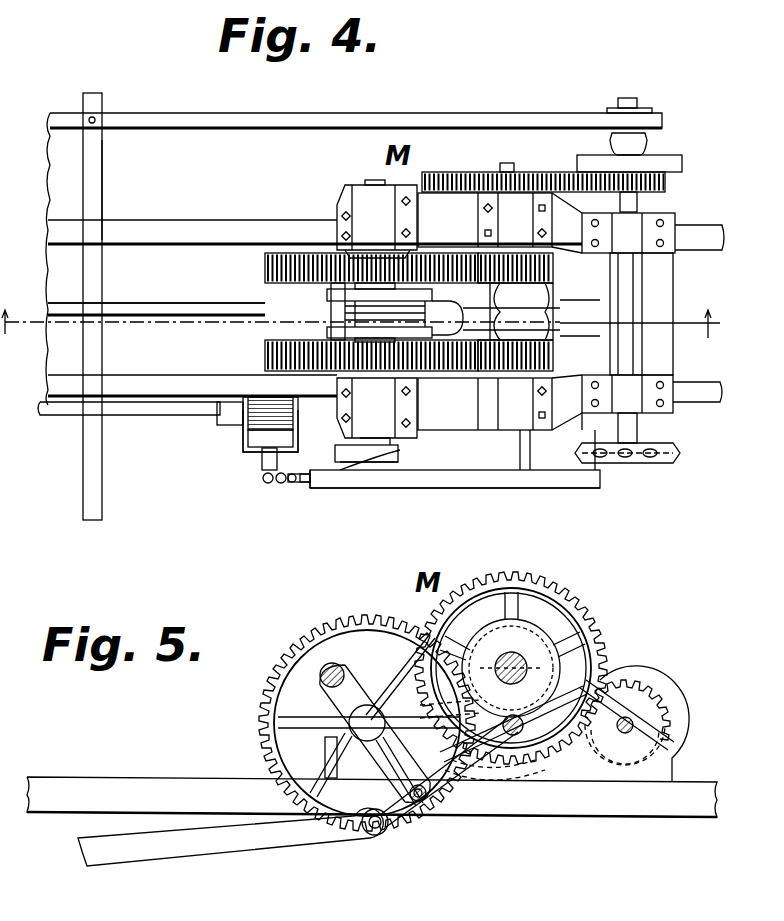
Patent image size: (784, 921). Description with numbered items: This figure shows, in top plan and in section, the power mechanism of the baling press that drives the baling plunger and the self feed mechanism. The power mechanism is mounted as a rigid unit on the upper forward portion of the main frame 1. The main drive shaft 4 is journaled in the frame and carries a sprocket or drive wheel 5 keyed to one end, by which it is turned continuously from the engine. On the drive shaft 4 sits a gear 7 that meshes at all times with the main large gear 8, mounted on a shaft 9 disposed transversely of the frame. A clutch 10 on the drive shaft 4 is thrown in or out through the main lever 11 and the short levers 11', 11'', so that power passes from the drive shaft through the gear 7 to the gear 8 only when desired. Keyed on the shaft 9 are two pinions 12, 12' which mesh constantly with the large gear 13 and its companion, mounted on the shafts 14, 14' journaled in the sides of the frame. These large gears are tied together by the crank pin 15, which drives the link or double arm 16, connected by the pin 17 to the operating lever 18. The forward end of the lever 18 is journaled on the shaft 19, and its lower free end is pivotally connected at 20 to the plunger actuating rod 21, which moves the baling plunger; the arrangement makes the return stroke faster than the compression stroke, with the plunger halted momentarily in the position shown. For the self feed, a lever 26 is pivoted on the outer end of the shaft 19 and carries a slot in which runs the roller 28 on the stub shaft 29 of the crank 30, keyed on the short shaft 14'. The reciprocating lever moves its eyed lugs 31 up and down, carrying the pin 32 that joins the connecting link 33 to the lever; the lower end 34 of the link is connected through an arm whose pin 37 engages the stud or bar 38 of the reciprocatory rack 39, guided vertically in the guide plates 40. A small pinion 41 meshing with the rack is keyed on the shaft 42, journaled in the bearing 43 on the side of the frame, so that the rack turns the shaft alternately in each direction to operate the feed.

In FIG. 5, the main frame 1 is at (578, 808).
In FIG. 4, the main drive shaft 4 is at (628, 291).
In FIG. 5, the main drive shaft 4 is at (650, 700).
In FIG. 4, the sprocket or drive wheel 5 is at (645, 475).
In FIG. 4, the gear 7 is at (665, 183).
In FIG. 5, the gear 7 is at (632, 715).
In FIG. 4, the main large gear 8 is at (540, 178).
In FIG. 5, the main large gear 8 is at (578, 595).
In FIG. 4, the shaft 9 is at (500, 166).
In FIG. 5, the shaft 9 is at (515, 660).
In FIG. 4, the clutch 10 is at (652, 160).
In FIG. 4, the main lever 11 is at (354, 245).
In FIG. 4, the short lever 11' is at (66, 294).
In FIG. 4, the short lever 11'' is at (129, 190).
In FIG. 4, the gear or pinion 12 is at (535, 275).
In FIG. 5, the gear or pinion 12 is at (549, 697).
In FIG. 4, the gear or pinion 12' is at (537, 355).
In FIG. 4, the large gear 13 is at (418, 250).
In FIG. 5, the large gear 13 is at (350, 625).
In FIG. 4, the shaft 14 is at (367, 204).
In FIG. 4, the shaft 14' is at (404, 420).
In FIG. 4, the crank pin 15 is at (265, 292).
In FIG. 5, the crank pin 15 is at (283, 692).
In FIG. 4, the link or double arm 16 is at (265, 340).
In FIG. 5, the link or double arm 16 is at (405, 730).
In FIG. 4, the pin 17 is at (425, 308).
In FIG. 5, the pin 17 is at (422, 805).
In FIG. 4, the operating lever 18 is at (520, 325).
In FIG. 5, the operating lever 18 is at (450, 780).
In FIG. 4, the shaft 19 is at (520, 462).
In FIG. 5, the shaft 19 is at (520, 733).
In FIG. 5, the pivot connection 20 is at (372, 835).
In FIG. 4, the plunger actuating link or rod 21 is at (148, 312).
In FIG. 5, the plunger actuating link or rod 21 is at (198, 850).
In FIG. 4, the lever 26 is at (482, 488).
In FIG. 4, the roller 28 is at (318, 488).
In FIG. 4, the short stub shaft 29 is at (398, 462).
In FIG. 4, the crank 30 is at (345, 470).
In FIG. 4, the eyed lugs 31 is at (436, 370).
In FIG. 4, the pin 32 is at (308, 482).
In FIG. 4, the connecting link 33 is at (285, 483).
In FIG. 4, the lower end of link 34 is at (280, 483).
In FIG. 4, the pin 37 is at (275, 478).
In FIG. 4, the stud or bar 38 is at (265, 470).
In FIG. 4, the reciprocatory rack 39 is at (262, 452).
In FIG. 4, the guide plates 40 is at (243, 433).
In FIG. 4, the small pinion 41 is at (270, 397).
In FIG. 4, the shaft 42 is at (72, 415).
In FIG. 4, the bearing 43 is at (222, 418).